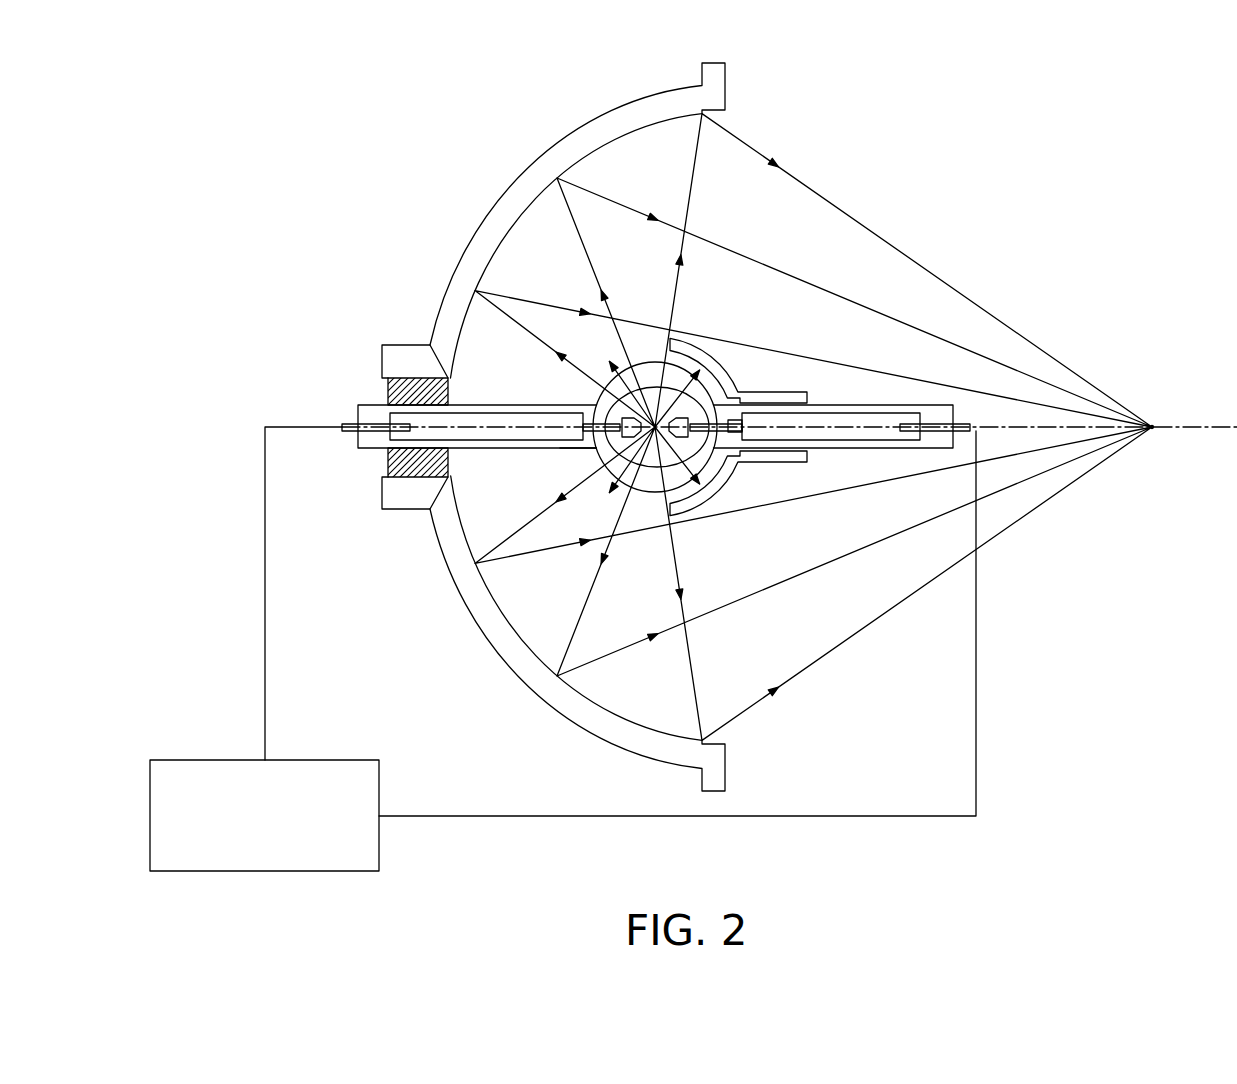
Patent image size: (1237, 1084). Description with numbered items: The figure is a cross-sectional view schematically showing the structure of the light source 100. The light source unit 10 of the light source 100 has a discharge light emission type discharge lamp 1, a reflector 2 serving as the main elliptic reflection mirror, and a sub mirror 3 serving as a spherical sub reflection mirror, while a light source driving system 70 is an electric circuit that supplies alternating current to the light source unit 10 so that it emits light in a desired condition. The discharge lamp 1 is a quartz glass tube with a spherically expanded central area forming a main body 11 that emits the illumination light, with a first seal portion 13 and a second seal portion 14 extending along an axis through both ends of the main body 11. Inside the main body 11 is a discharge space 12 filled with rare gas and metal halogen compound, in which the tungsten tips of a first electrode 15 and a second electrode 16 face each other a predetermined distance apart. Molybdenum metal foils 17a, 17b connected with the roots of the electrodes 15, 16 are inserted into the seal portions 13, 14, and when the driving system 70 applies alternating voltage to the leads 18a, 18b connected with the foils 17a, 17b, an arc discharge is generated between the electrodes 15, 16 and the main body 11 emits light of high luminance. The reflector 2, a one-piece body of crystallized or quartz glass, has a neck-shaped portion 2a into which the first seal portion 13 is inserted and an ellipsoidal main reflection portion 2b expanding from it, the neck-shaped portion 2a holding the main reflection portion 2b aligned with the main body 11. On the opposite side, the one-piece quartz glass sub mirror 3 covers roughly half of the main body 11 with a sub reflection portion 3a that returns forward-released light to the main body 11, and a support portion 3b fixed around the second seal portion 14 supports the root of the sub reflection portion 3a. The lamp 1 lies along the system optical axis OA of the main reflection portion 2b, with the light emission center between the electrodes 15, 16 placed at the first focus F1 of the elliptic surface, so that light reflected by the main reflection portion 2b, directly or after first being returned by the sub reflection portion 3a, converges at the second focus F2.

The light source 100 is at (1145, 94).
The light source unit 10 is at (827, 151).
The discharge lamp 1 is at (827, 347).
The reflector 2 is at (540, 167).
The neck-shaped portion 2a is at (401, 504).
The main reflection portion 2b is at (516, 665).
The sub mirror 3 is at (748, 415).
The sub reflection portion 3a is at (698, 340).
The support portion 3b is at (775, 464).
The main body 11 is at (590, 400).
The discharge space 12 is at (650, 468).
The first seal portion 13 is at (439, 507).
The second seal portion 14 is at (879, 452).
The first electrode 15 is at (590, 447).
The second electrode 16 is at (743, 420).
The metal foil 17a is at (487, 417).
The metal foil 17b is at (852, 418).
The lead 18a is at (347, 420).
The lead 18b is at (934, 422).
The light source driving system 70 is at (308, 770).
The first focus F1 is at (650, 432).
The second focus F2 is at (1153, 424).
The system optical axis OA is at (1206, 431).